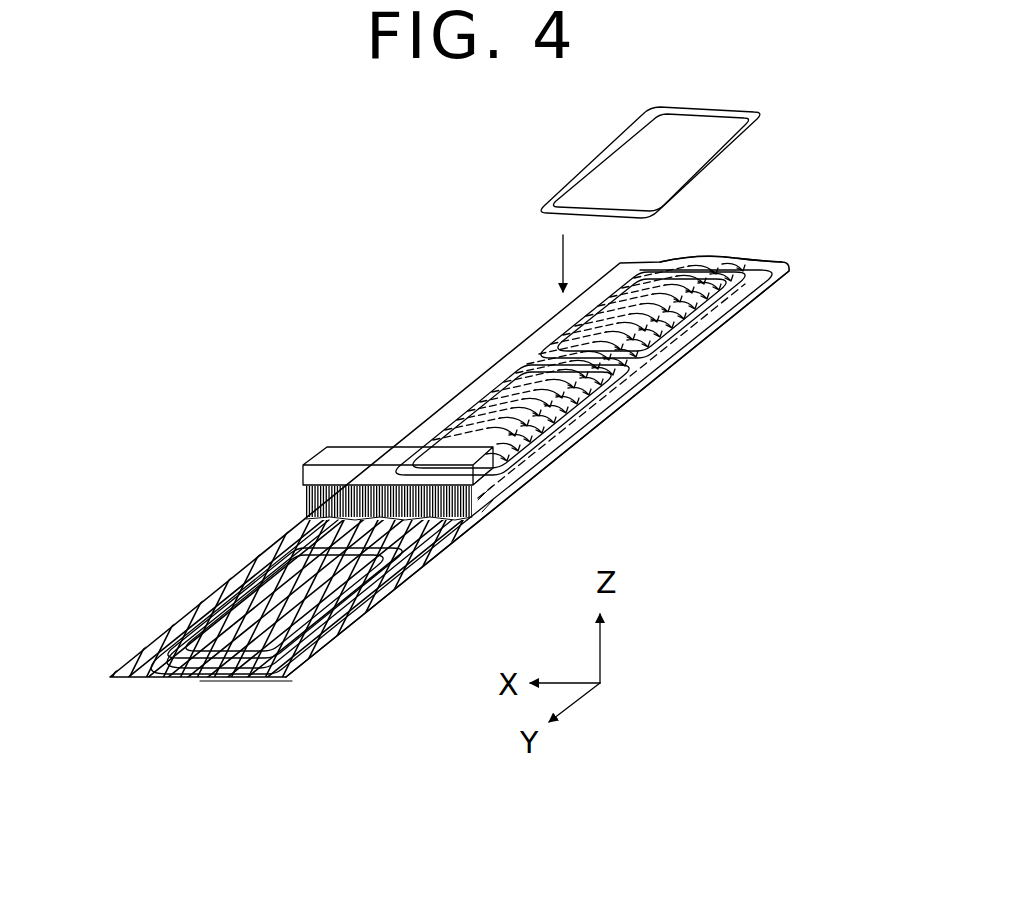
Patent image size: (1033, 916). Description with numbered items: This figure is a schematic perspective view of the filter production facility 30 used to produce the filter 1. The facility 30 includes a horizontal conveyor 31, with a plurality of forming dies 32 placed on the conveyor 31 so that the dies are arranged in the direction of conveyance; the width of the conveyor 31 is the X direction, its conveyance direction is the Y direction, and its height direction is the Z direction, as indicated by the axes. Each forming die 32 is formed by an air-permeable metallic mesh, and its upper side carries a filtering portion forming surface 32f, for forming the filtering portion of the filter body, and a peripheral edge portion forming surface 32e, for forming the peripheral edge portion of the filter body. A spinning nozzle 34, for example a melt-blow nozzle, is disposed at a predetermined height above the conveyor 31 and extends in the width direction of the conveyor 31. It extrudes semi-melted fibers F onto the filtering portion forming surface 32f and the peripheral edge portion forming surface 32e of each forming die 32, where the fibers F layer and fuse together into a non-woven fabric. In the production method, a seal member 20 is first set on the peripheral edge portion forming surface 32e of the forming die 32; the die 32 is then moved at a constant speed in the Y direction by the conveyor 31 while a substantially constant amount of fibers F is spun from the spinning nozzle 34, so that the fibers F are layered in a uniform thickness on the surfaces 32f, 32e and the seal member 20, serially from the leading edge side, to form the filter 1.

The filter 1 is at (190, 686).
The seal member 20 is at (690, 106).
The filter production facility 30 is at (400, 378).
The conveyor 31 is at (697, 352).
The forming die 32 is at (674, 265).
The peripheral edge portion forming surface 32e is at (735, 315).
The filtering portion forming surface 32f is at (745, 262).
The spinning nozzle 34 is at (333, 455).
The semi-melted fibers F is at (305, 497).